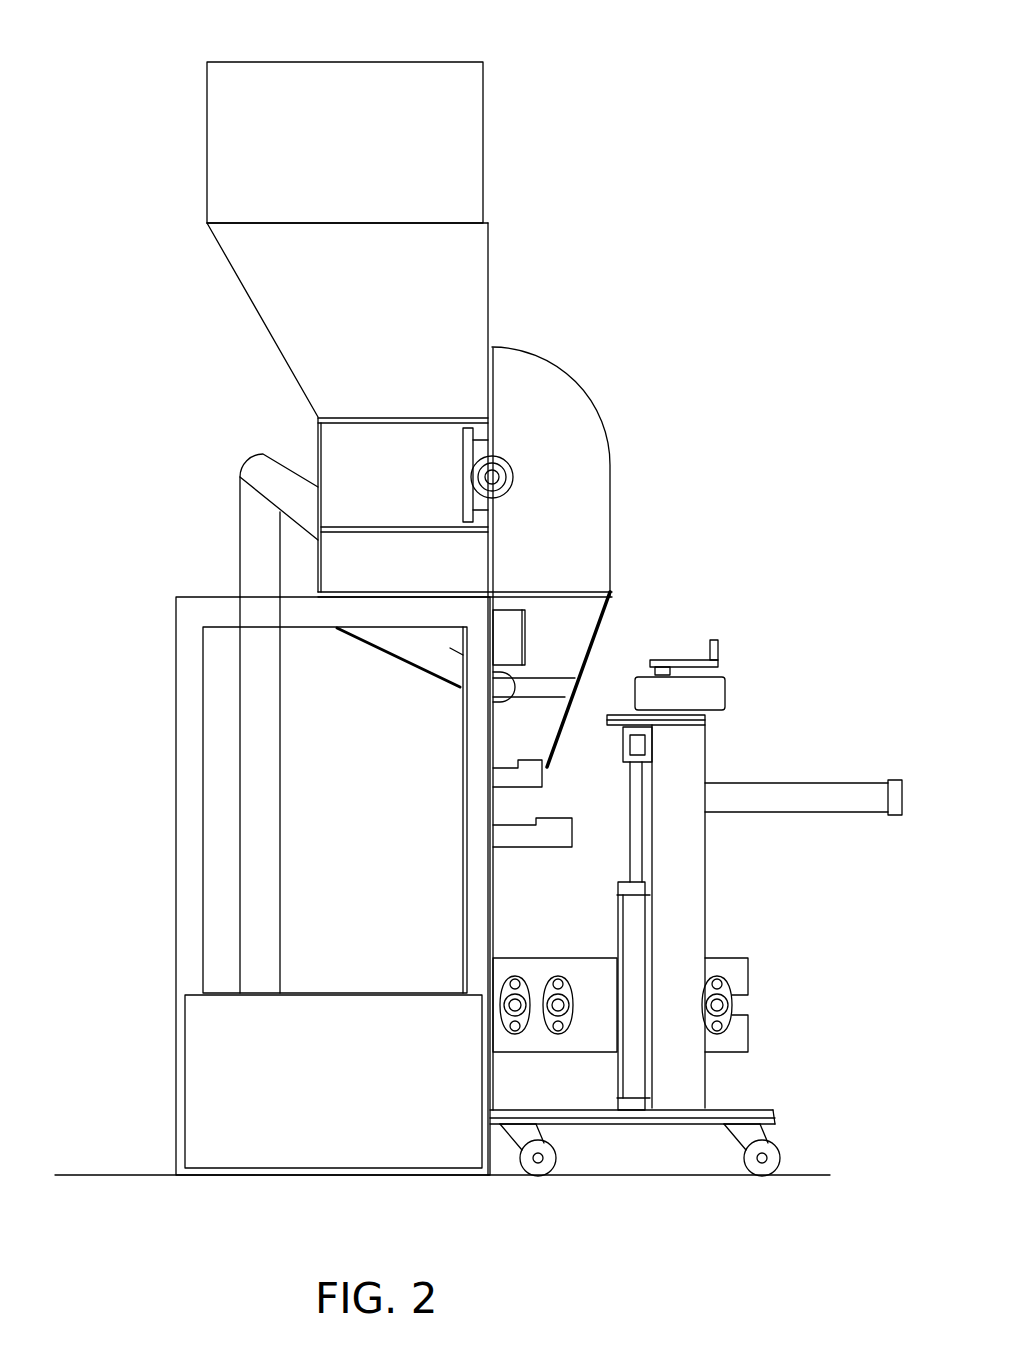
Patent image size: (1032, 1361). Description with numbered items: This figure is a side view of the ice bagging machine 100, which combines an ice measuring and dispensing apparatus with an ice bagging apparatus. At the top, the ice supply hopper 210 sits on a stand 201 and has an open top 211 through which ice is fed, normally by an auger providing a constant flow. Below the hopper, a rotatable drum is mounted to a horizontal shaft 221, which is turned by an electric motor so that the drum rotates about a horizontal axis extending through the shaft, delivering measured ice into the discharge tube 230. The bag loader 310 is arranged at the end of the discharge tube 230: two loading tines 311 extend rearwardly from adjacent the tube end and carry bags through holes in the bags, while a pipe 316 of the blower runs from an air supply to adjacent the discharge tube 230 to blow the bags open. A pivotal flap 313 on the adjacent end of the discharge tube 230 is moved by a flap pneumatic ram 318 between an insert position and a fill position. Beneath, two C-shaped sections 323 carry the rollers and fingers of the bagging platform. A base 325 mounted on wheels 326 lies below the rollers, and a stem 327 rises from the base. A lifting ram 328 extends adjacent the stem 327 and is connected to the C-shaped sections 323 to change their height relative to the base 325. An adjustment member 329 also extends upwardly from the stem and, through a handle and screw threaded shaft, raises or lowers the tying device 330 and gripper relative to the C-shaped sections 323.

The ice bagging machine 100 is at (642, 127).
The stand 201 is at (190, 848).
The ice supply hopper 210 is at (467, 298).
The open top 211 is at (327, 108).
The horizontal shaft 221 is at (512, 478).
The discharge tube 230 is at (575, 617).
The bag loader 310 is at (414, 779).
The loading tines 311 is at (383, 652).
The pivotal flap 313 is at (630, 697).
The pipe 316 is at (250, 710).
The flap pneumatic ram 318 is at (565, 722).
The C-shaped sections 323 is at (732, 1042).
The base 325 is at (618, 1118).
The wheels 326 is at (542, 1172).
The stem 327 is at (690, 920).
The lifting ram 328 is at (627, 928).
The adjustment member 329 is at (712, 692).
The tying device 330 is at (810, 795).